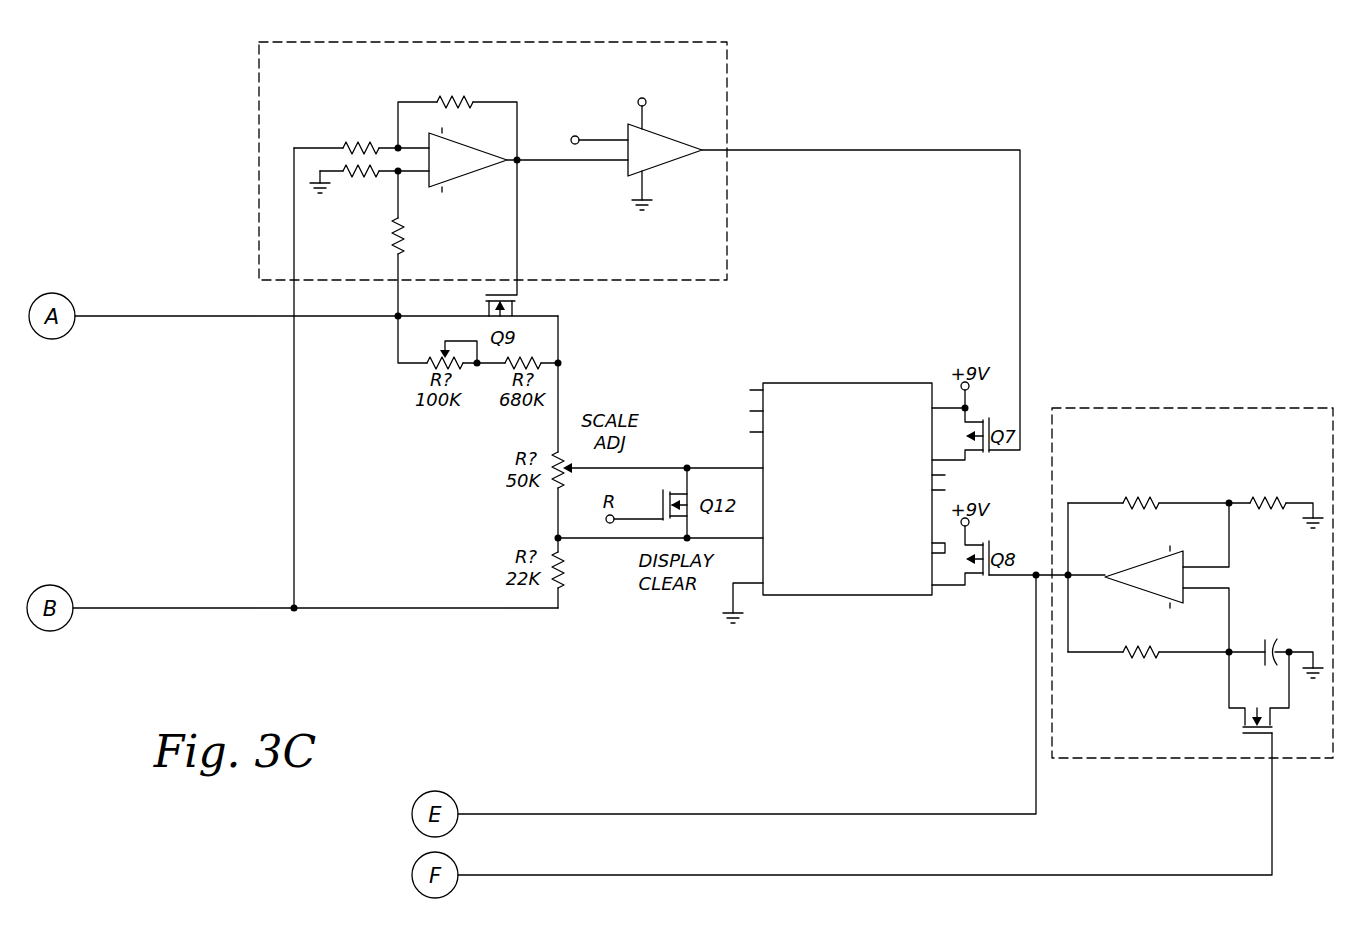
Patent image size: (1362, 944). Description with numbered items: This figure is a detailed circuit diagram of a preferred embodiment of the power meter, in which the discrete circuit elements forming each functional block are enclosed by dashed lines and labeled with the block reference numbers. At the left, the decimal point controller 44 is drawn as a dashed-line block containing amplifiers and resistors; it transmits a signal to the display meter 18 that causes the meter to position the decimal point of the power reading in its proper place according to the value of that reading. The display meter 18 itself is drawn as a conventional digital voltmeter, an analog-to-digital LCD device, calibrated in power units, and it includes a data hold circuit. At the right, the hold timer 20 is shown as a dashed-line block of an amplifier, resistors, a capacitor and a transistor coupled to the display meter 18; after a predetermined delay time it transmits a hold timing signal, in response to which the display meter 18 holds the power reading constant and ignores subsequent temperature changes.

The decimal point controller 44 is at (715, 97).
The display meter 18 is at (843, 575).
The hold timer 20 is at (1300, 416).